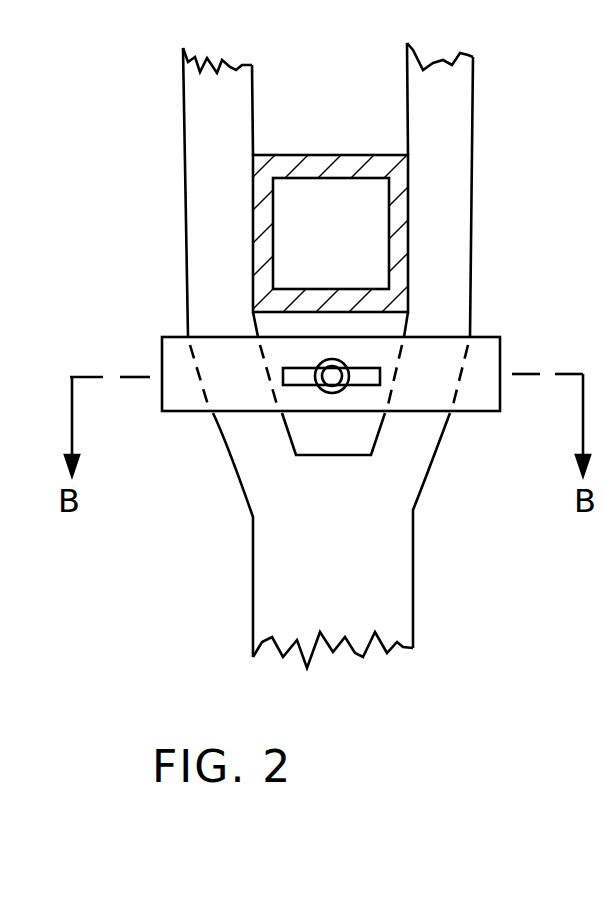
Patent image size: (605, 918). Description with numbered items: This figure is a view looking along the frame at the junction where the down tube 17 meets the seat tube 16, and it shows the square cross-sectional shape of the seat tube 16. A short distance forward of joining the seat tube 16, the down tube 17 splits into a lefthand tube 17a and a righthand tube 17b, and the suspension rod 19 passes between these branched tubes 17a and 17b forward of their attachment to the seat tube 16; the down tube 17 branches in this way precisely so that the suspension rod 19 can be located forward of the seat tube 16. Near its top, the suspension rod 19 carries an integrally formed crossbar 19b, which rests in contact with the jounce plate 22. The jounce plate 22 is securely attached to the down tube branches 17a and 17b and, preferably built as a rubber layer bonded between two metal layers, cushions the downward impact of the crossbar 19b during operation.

The seat tube 16 is at (322, 155).
The down tube 17 is at (414, 573).
The lefthand tube 17a is at (474, 167).
The righthand tube 17b is at (186, 208).
The suspension rod 19 is at (325, 360).
The crossbar 19b is at (368, 387).
The jounce plate 22 is at (470, 412).